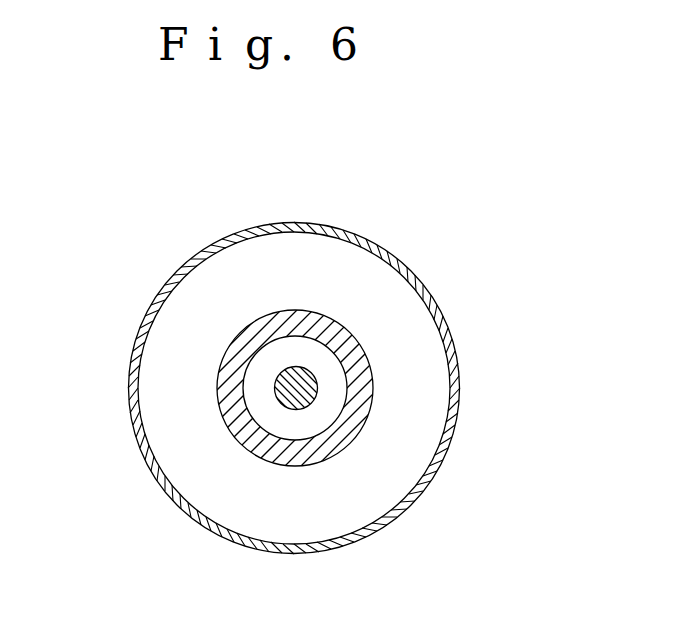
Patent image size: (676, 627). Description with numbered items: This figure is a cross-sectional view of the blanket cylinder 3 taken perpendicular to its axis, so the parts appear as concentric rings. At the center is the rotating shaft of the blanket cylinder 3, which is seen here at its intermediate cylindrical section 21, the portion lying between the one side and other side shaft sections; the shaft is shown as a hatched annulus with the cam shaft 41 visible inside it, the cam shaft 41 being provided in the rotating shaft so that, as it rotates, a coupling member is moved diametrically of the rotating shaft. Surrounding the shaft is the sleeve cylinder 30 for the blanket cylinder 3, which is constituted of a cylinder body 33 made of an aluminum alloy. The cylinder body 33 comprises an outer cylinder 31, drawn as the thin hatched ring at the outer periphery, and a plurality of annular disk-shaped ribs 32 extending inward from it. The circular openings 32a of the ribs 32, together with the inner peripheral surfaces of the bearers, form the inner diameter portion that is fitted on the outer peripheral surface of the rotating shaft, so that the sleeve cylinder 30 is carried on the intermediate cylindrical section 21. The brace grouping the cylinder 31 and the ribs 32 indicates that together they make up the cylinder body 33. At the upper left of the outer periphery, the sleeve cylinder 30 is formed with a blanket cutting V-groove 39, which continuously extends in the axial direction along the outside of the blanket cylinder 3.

The blanket cylinder 3 is at (442, 465).
The intermediate cylindrical section 21 is at (248, 450).
The sleeve cylinder 30 is at (371, 242).
The cylinder 31 is at (420, 279).
The annular disk-shaped ribs 32 is at (408, 322).
The circular openings 32a is at (221, 418).
The cylinder body 33 is at (528, 238).
The blanket cutting V-groove 39 is at (214, 247).
The cam shaft 41 is at (275, 389).